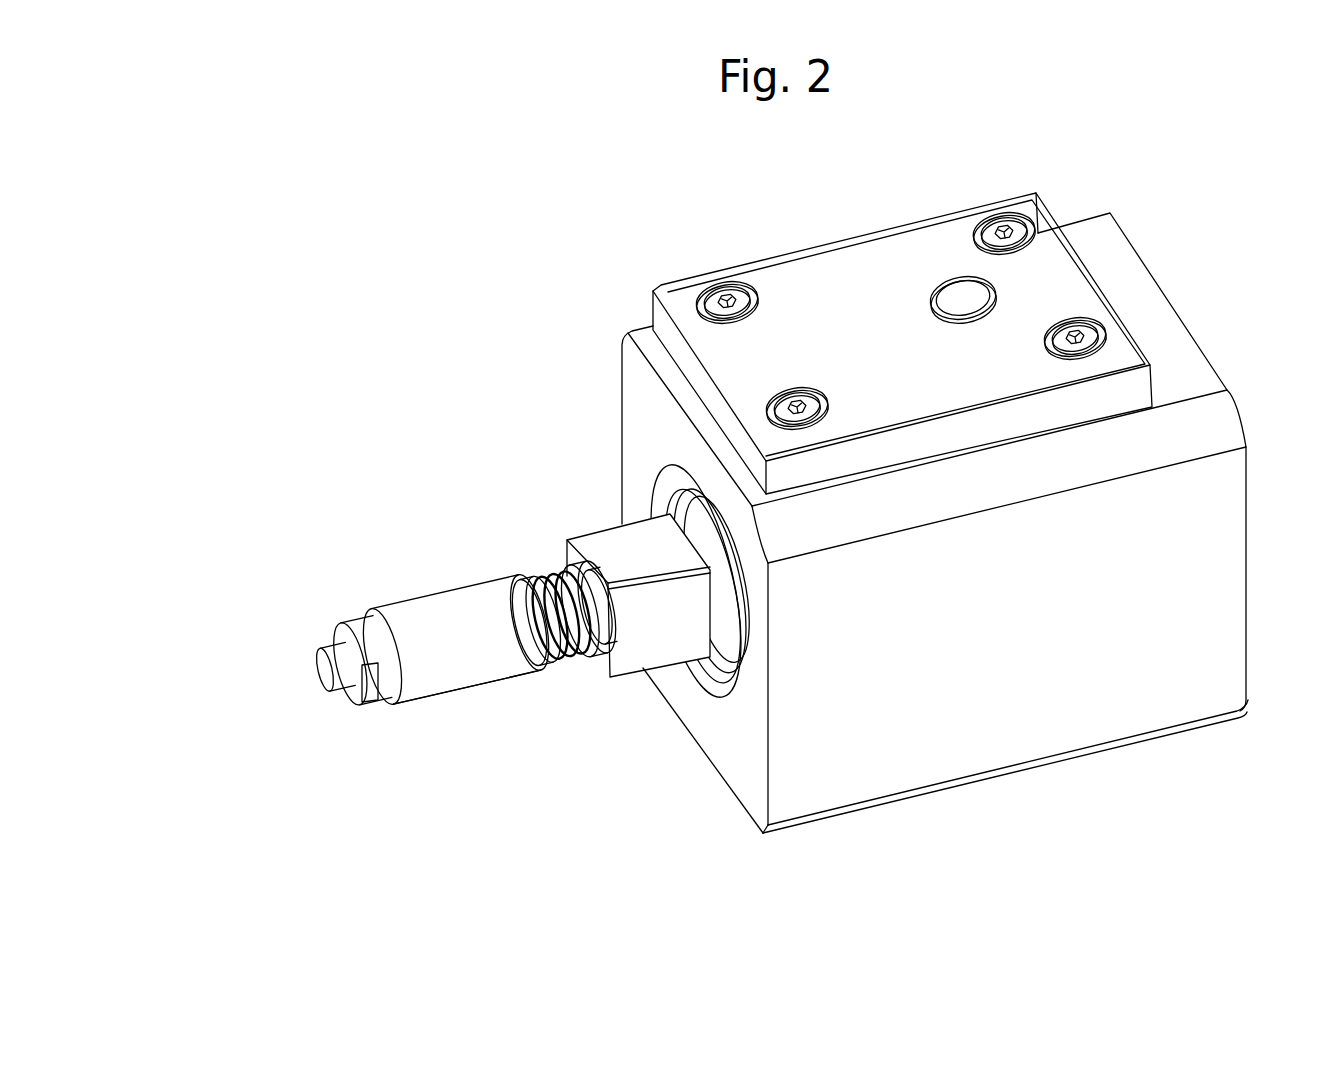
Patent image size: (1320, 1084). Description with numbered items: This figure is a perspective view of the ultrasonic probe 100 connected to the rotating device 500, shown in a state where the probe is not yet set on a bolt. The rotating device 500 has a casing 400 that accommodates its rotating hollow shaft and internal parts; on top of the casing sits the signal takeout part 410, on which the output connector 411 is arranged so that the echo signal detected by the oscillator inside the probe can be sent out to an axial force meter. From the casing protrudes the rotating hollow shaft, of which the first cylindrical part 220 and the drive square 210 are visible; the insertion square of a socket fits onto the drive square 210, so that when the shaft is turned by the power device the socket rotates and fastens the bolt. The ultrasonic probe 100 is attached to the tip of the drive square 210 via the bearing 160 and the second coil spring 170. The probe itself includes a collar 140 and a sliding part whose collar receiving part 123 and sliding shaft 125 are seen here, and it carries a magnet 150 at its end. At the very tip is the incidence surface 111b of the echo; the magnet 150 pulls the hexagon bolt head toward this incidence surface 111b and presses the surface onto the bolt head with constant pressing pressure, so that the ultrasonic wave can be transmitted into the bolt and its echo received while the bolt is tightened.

The ultrasonic probe 100 is at (448, 683).
The incidence surface 111b is at (323, 667).
The collar receiving part 123 is at (540, 668).
The sliding shaft 125 is at (583, 592).
The collar 140 is at (430, 615).
The magnet 150 is at (347, 625).
The bearing 160 is at (600, 655).
The second coil spring 170 is at (543, 585).
The drive square 210 is at (608, 545).
The first cylindrical part 220 is at (723, 693).
The casing 400 is at (1113, 728).
The signal takeout part 410 is at (812, 305).
The output connector 411 is at (957, 297).
The rotating device 500 is at (1095, 220).